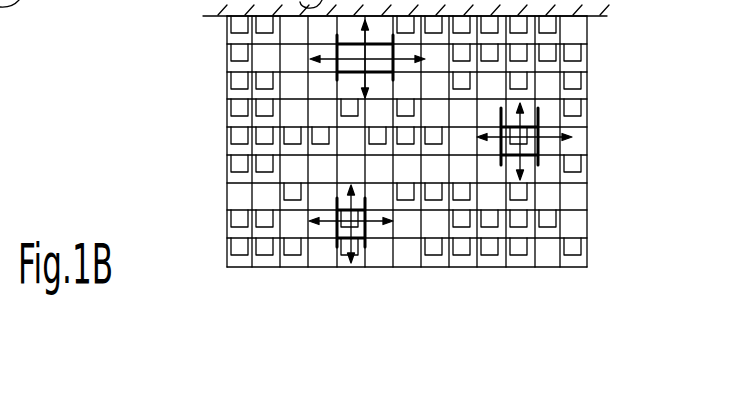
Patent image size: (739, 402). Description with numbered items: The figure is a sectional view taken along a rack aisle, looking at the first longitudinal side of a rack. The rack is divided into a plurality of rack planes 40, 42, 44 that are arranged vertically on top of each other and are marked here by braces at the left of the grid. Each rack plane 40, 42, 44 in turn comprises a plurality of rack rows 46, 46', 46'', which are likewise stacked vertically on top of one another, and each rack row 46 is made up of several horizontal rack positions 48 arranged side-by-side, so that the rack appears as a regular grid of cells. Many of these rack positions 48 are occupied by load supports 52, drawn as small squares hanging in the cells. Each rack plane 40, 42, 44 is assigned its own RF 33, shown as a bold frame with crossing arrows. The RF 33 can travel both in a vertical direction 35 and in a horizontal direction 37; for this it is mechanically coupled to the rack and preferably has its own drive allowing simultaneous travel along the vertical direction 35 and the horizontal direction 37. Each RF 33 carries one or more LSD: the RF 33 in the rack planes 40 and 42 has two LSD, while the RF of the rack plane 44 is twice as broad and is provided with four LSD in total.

The RF 33 is at (541, 118).
The vertical direction 35 is at (352, 242).
The horizontal direction 37 is at (335, 223).
The rack plane 40 is at (219, 186).
The rack plane 42 is at (219, 101).
The rack plane 44 is at (219, 22).
The rack row 46 is at (454, 244).
The rack row 46' is at (456, 216).
The rack row 46'' is at (485, 188).
The rack position 48 is at (573, 268).
The load support 52 is at (571, 53).